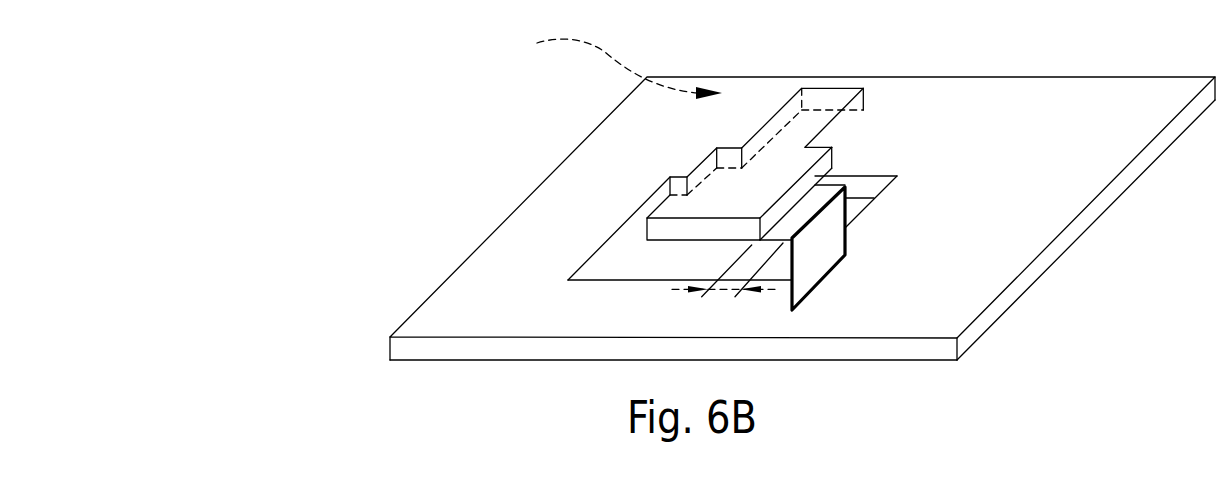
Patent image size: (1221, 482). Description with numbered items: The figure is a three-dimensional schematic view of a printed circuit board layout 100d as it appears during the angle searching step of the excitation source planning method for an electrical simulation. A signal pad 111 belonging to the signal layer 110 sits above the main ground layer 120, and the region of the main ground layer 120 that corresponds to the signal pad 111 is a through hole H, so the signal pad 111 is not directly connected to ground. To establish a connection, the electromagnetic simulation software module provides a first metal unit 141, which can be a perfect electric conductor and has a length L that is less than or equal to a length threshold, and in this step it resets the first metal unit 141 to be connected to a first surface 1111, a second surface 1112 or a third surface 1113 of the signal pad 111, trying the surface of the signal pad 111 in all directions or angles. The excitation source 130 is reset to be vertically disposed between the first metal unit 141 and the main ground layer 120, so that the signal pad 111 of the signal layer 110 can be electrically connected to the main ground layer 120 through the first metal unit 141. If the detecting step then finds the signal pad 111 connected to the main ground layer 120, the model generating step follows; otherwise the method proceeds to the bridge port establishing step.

The printed circuit board layout 100d is at (290, 34).
The signal layer 110 is at (604, 61).
The signal pad 111 is at (601, 145).
The first surface 1111 is at (798, 192).
The second surface 1112 is at (688, 230).
The third surface 1113 is at (673, 195).
The main ground layer 120 is at (453, 308).
The excitation source 130 is at (826, 277).
The first metal unit 141 is at (827, 192).
The through hole H is at (870, 177).
The length L is at (722, 300).